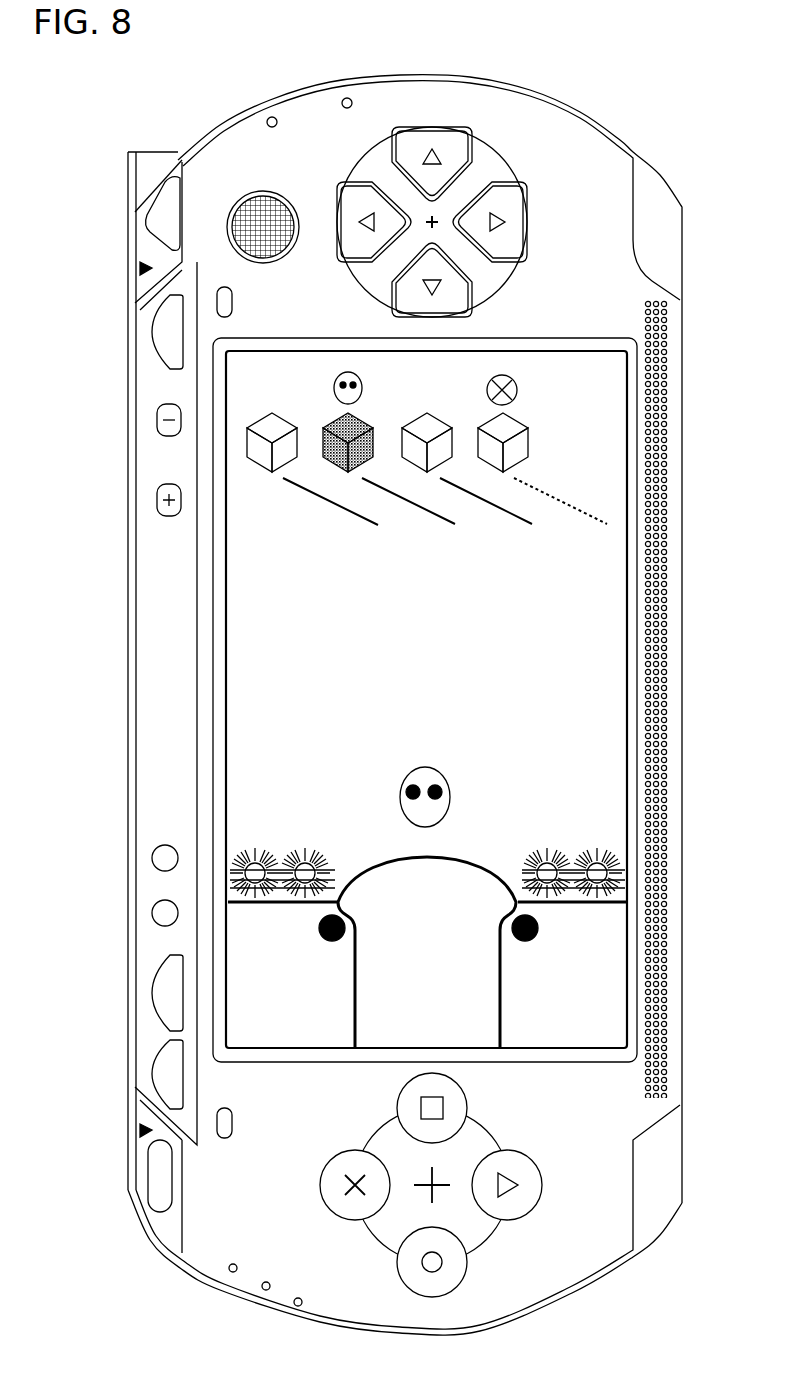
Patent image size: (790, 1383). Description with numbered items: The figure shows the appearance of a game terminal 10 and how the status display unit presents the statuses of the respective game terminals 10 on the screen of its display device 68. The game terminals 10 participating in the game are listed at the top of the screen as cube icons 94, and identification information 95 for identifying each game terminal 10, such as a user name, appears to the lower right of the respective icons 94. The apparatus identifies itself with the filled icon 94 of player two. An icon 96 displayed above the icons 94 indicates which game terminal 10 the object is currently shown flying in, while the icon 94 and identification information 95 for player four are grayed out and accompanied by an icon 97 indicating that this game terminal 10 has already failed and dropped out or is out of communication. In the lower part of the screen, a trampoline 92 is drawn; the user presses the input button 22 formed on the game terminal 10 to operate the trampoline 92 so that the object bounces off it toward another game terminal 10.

The game terminal 10 is at (704, 116).
The input button 22 is at (440, 1270).
The display device 68 is at (228, 643).
The trampoline 92 is at (428, 858).
The cube icon 94 is at (528, 447).
The identification information 95 is at (343, 512).
The icon 96 is at (362, 385).
The icon 97 is at (517, 388).